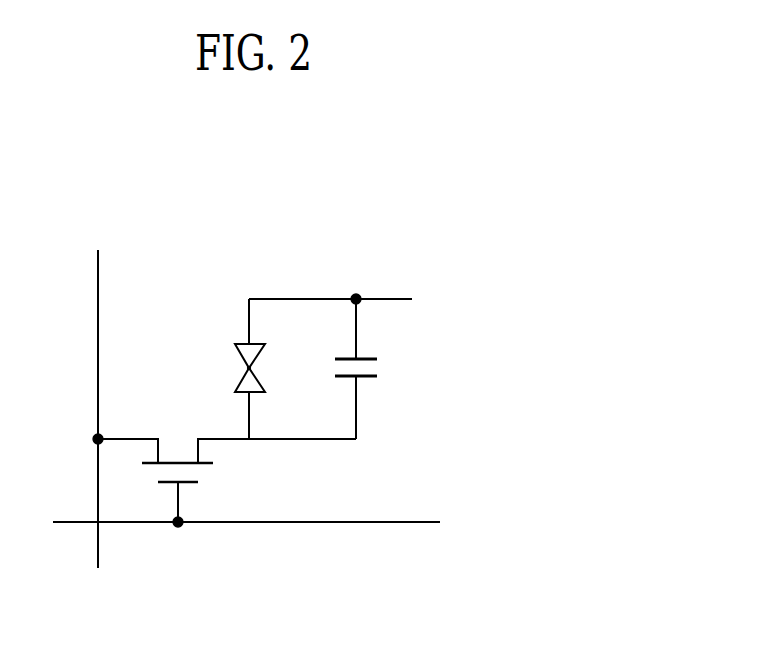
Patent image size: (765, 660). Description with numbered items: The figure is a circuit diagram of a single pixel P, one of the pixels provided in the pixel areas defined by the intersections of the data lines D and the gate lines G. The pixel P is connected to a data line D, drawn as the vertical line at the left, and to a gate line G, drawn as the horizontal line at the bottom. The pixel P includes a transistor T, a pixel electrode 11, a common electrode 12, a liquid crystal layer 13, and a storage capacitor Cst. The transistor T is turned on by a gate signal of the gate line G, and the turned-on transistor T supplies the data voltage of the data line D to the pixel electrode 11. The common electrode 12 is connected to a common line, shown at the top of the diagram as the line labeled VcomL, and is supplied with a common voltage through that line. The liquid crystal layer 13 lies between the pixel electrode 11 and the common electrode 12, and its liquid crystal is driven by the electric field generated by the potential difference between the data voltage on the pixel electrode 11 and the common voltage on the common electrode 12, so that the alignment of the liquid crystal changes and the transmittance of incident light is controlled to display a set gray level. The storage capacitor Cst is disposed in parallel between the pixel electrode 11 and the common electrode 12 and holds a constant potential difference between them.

The pixel electrode 11 is at (237, 391).
The common electrode 12 is at (237, 345).
The liquid crystal layer 13 is at (263, 368).
The data line D is at (97, 327).
The gate line G is at (312, 523).
The transistor T is at (227, 480).
The pixel P is at (380, 250).
The storage capacitor Cst is at (377, 369).
The common voltage line VcomL is at (370, 299).